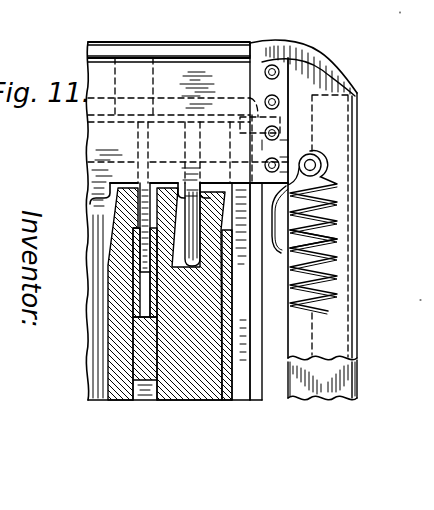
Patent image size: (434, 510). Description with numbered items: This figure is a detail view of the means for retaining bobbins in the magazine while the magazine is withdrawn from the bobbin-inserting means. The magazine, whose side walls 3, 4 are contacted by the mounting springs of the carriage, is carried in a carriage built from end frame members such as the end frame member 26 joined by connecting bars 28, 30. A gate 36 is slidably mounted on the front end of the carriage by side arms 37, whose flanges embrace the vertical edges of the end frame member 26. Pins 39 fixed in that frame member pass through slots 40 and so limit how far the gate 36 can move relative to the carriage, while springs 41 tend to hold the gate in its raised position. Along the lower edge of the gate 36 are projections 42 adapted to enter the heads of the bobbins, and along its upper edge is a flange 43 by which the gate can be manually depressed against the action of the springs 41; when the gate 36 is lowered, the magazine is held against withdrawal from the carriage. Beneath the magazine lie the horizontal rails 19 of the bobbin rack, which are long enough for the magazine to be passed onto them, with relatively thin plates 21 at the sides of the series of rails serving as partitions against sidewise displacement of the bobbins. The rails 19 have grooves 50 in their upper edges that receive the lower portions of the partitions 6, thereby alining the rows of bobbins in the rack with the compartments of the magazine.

The side wall 3 is at (427, 303).
The side wall 4 is at (240, 373).
The partitions 6 is at (136, 246).
The horizontal rails 19 is at (140, 343).
The thin plates 21 is at (228, 322).
The end frame member 26 is at (330, 381).
The connecting bar 28 is at (276, 232).
The connecting bar 30 is at (410, 6).
The gate 36 is at (103, 140).
The side arms 37 is at (330, 323).
The pins 39 is at (313, 165).
The slots 40 is at (334, 211).
The springs 41 is at (334, 246).
The projections 42 is at (187, 201).
The flange 43 is at (178, 52).
The grooves 50 is at (147, 288).